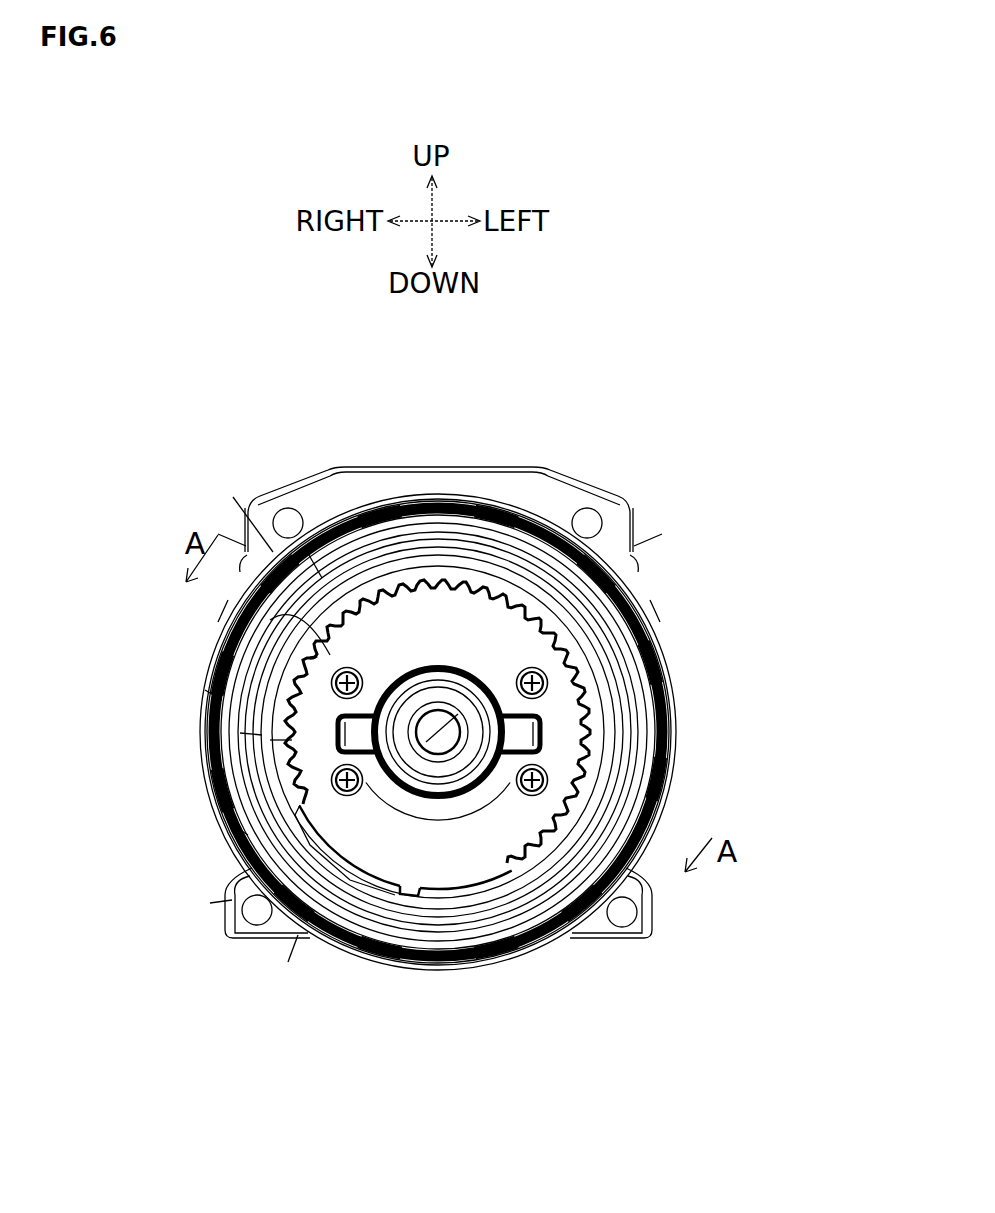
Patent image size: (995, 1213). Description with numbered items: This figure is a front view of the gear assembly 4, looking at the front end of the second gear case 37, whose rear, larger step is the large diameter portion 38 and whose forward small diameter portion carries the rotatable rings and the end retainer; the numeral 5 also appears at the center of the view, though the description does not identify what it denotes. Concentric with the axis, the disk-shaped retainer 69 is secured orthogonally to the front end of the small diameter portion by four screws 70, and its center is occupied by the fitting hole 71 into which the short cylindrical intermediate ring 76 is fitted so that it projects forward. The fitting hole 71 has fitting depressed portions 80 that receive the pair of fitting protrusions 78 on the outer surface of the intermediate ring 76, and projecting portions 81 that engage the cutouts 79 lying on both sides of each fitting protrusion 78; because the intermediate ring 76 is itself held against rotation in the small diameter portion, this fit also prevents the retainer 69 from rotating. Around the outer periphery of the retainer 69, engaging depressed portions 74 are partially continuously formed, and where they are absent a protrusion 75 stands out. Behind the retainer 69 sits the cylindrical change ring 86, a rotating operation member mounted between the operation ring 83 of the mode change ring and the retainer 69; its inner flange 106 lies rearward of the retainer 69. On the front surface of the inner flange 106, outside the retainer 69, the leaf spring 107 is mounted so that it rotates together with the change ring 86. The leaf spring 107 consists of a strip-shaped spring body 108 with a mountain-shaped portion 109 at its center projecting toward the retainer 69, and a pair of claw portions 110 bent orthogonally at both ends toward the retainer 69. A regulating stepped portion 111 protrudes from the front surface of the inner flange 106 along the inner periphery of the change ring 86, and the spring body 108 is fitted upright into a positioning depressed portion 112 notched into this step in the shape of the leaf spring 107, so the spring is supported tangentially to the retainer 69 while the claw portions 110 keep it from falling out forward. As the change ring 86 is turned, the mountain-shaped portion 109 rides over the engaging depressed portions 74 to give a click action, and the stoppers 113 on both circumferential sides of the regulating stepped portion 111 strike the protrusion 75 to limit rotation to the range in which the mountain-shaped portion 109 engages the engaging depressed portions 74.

The gear assembly 4 is at (596, 456).
The shaft 5 is at (438, 690).
The second gear case 37 is at (637, 518).
The large diameter portion 38 is at (540, 500).
The retainer 69 is at (575, 705).
The screw 70 is at (292, 560).
The fitting hole 71 is at (398, 887).
The engaging depressed portion 74 is at (395, 520).
The protrusion 75 is at (348, 940).
The intermediate ring 76 is at (456, 640).
The fitting protrusion 78 is at (550, 686).
The cutout 79 is at (603, 585).
The fitting depressed portion 80 is at (329, 782).
The projecting portion 81 is at (340, 535).
The operation ring 83 is at (540, 555).
The change ring 86 is at (416, 560).
The inner flange 106 is at (486, 562).
The leaf spring 107 is at (300, 640).
The spring body 108 is at (238, 830).
The mountain-shaped portion 109 is at (262, 735).
The claw portion 110 is at (218, 702).
The regulating stepped portion 111 is at (222, 696).
The positioning depressed portion 112 is at (290, 740).
The stopper 113 is at (310, 548).